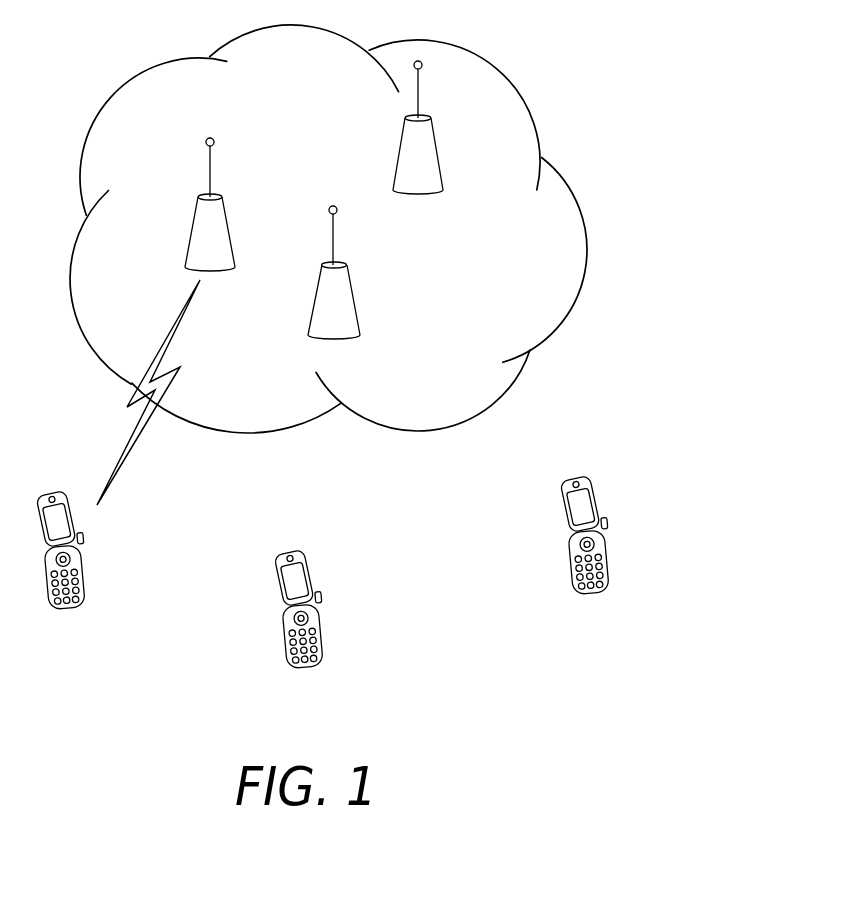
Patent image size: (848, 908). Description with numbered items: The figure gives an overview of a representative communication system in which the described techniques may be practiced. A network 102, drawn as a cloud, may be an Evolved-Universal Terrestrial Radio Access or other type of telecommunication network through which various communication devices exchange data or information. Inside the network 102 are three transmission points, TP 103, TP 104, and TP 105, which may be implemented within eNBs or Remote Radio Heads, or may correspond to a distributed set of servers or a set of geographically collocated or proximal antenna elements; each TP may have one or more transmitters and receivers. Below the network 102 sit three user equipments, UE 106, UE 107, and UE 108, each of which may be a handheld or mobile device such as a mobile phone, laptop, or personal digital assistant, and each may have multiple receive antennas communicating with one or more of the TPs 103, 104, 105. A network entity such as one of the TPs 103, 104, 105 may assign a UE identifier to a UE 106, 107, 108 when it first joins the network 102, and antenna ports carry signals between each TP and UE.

The network 102 is at (460, 46).
The transmission point 103 is at (204, 194).
The transmission point 104 is at (399, 150).
The transmission point 105 is at (353, 297).
The UE 106 is at (78, 578).
The UE 107 is at (318, 635).
The UE 108 is at (602, 577).